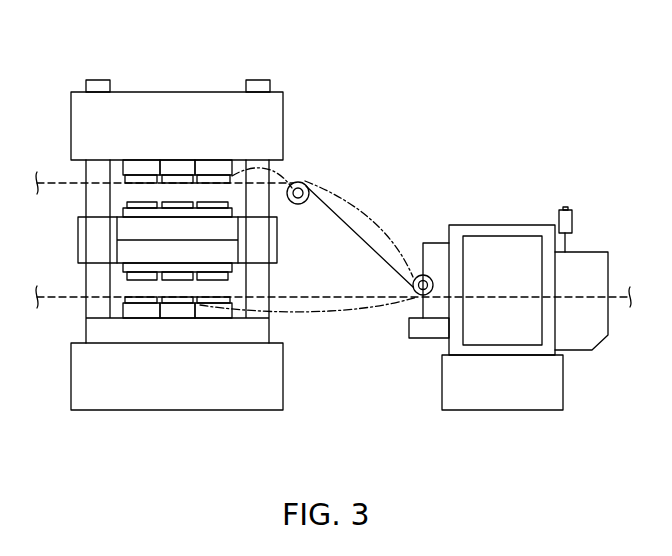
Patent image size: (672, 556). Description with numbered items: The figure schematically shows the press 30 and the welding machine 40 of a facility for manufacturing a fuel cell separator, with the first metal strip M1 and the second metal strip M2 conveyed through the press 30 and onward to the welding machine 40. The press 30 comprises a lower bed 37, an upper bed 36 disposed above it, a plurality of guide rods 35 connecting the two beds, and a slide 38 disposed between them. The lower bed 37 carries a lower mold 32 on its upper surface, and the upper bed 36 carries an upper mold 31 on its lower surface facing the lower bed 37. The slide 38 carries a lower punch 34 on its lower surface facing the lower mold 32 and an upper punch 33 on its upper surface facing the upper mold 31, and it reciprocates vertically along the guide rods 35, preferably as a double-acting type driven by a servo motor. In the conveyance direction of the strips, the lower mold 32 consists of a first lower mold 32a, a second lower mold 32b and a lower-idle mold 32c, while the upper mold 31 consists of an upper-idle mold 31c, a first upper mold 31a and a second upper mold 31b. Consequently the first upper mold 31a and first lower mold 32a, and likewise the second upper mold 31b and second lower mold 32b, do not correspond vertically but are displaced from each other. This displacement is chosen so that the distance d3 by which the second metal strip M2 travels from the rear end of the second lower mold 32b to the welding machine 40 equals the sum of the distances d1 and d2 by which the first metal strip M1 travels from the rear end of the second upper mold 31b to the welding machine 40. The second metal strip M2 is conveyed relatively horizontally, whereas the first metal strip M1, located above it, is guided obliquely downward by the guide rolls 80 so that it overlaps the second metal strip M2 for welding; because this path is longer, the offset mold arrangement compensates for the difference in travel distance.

The press 30 is at (57, 99).
The upper mold 31 is at (238, 53).
The first upper mold 31a is at (180, 167).
The second upper mold 31b is at (217, 167).
The upper-idle mold 31c is at (147, 167).
The lower mold 32 is at (235, 442).
The first lower mold 32a is at (147, 316).
The second lower mold 32b is at (180, 316).
The lower-idle mold 32c is at (218, 316).
The upper punch 33 is at (233, 205).
The lower punch 34 is at (122, 271).
The guide rod 35 is at (90, 193).
The upper bed 36 is at (82, 127).
The lower bed 37 is at (80, 371).
The slide 38 is at (267, 235).
The welding machine 40 is at (507, 223).
The guide roll 80 is at (308, 187).
The first metal strip M1 is at (56, 179).
The second metal strip M2 is at (56, 292).
The distance d1 is at (301, 184).
The distance d2 is at (375, 225).
The distance d3 is at (332, 312).